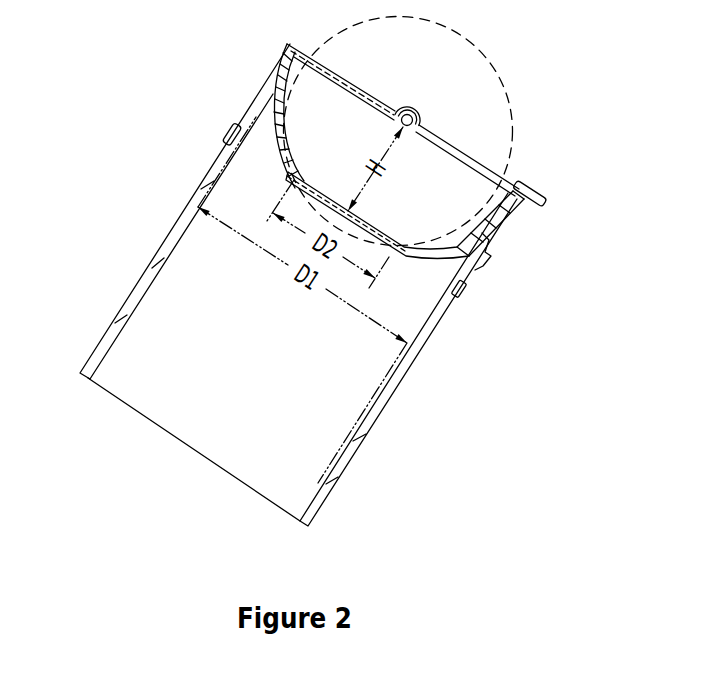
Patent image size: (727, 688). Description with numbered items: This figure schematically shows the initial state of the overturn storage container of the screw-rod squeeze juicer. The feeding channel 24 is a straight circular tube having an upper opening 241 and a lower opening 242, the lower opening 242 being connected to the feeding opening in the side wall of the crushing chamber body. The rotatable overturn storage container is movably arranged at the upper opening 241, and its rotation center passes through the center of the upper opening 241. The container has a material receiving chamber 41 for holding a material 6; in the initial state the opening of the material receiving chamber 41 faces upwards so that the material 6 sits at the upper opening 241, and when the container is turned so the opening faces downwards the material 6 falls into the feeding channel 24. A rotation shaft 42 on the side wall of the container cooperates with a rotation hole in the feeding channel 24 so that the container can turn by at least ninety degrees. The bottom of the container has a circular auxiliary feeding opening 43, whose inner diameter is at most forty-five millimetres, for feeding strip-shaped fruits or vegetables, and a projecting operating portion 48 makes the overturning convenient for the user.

The material 6 is at (493, 62).
The feeding channel 24 is at (446, 313).
The upper opening 241 is at (268, 124).
The lower opening 242 is at (267, 487).
The material receiving chamber 41 is at (417, 187).
The rotation shaft 42 is at (422, 118).
The auxiliary feeding opening 43 is at (500, 244).
The operating portion 48 is at (543, 199).